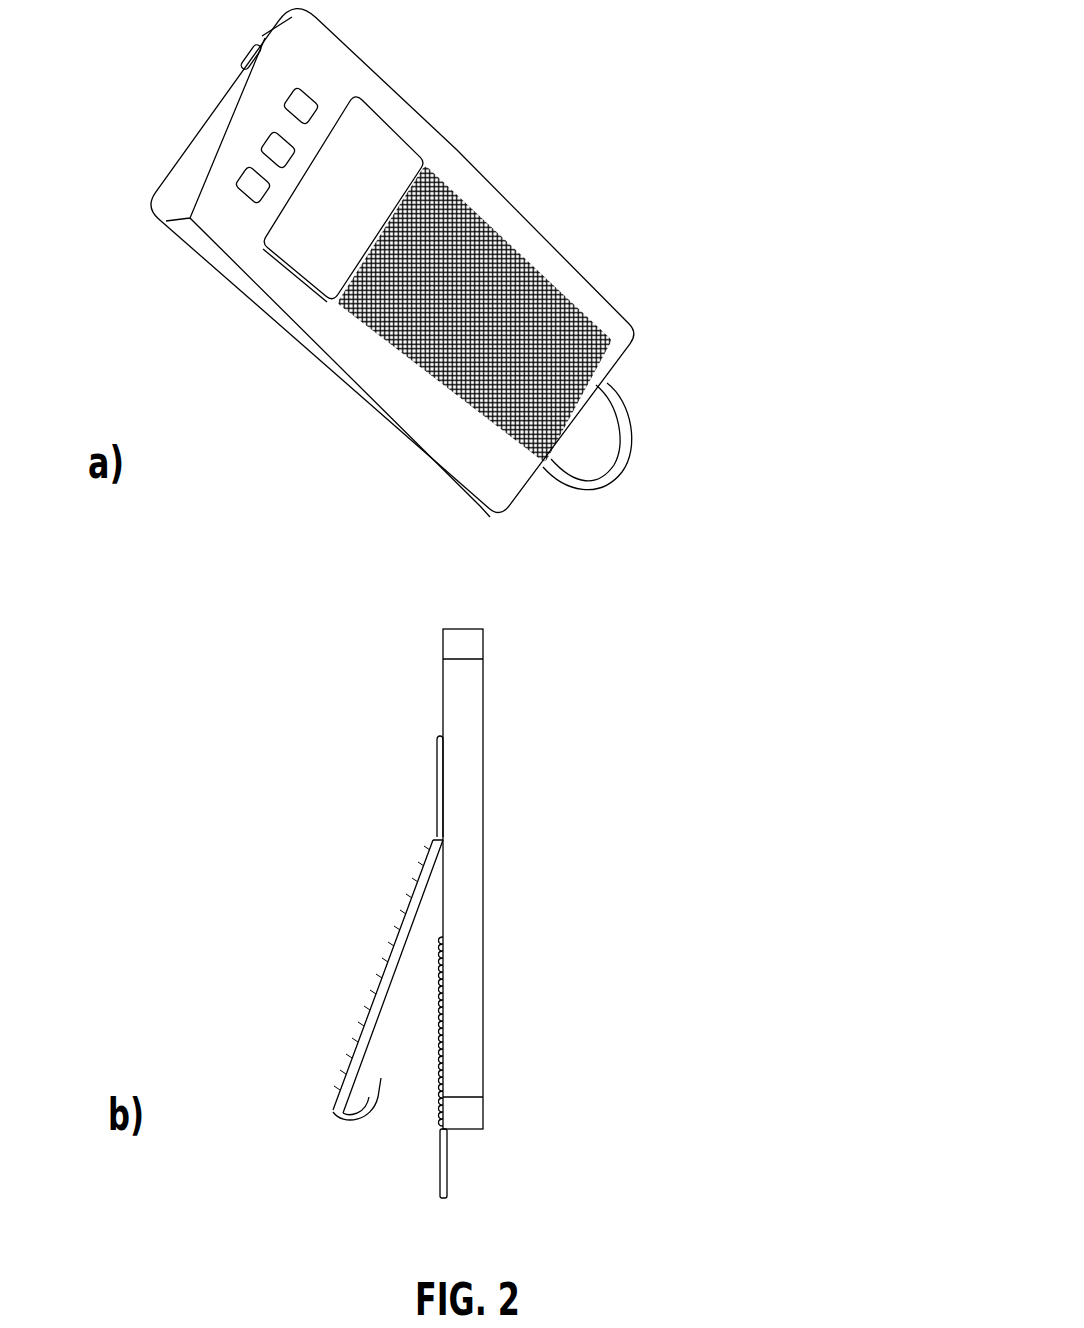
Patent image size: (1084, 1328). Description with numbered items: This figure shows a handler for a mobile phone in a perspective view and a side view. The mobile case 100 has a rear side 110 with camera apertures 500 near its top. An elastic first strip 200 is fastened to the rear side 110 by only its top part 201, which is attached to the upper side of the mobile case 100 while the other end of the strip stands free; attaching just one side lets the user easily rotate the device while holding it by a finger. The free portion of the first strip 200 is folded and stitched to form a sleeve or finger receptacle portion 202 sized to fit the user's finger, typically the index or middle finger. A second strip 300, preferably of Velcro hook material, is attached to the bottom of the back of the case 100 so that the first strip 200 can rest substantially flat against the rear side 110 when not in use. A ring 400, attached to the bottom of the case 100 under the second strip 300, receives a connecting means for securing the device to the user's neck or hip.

The mobile case 100 is at (692, 85).
The rear side 110 is at (372, 362).
The first strip 200 is at (447, 218).
The top part of the first strip 201 is at (293, 283).
The finger receptacle portion 202 is at (380, 1120).
The second strip 300 is at (443, 1017).
The ring 400 is at (630, 463).
The camera apertures 500 is at (280, 147).